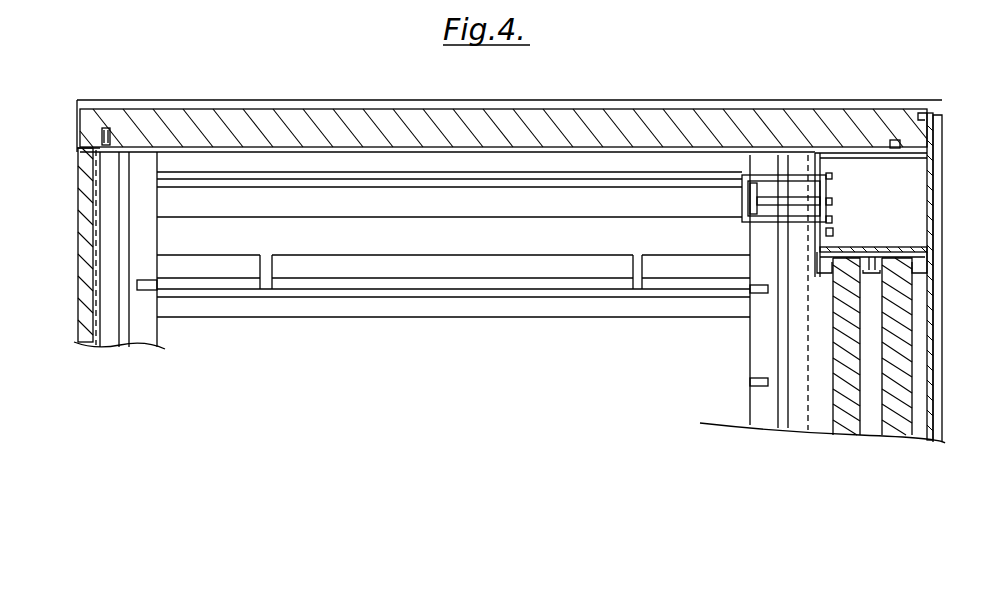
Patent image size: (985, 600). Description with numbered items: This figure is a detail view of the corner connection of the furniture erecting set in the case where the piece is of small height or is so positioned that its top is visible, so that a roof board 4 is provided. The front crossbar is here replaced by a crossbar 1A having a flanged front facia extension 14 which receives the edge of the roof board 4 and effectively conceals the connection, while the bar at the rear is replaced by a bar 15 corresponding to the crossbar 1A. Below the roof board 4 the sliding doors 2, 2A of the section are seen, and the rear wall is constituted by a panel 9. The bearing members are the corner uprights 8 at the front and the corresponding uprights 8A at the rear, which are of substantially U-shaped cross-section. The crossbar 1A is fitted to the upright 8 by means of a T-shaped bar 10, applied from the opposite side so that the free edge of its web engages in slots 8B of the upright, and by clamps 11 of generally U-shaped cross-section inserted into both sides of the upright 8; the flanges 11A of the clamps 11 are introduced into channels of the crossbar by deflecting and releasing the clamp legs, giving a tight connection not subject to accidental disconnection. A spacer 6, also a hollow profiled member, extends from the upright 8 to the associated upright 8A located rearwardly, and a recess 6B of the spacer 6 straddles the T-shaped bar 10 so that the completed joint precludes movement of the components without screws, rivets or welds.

The crossbar 1A is at (933, 188).
The sliding door 2 is at (850, 367).
The sliding door 2A is at (905, 298).
The roof board 4 is at (266, 112).
The spacer 6 is at (348, 190).
The recess 6B is at (742, 204).
The upright 8 is at (798, 413).
The upright 8A is at (124, 345).
The slot 8B is at (152, 286).
The panel 9 is at (80, 230).
The T-shaped bar 10 is at (795, 198).
The clamp 11 is at (758, 178).
The flange 11A is at (832, 178).
The flanged front facia extension 14 is at (937, 113).
The bar 15 is at (78, 112).